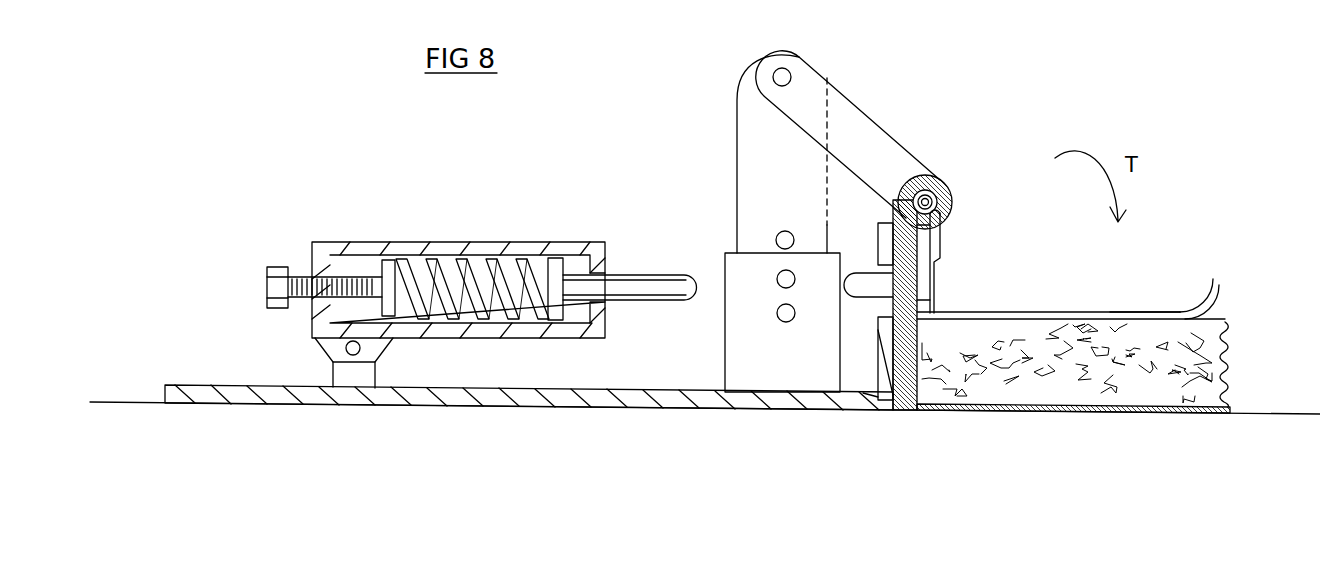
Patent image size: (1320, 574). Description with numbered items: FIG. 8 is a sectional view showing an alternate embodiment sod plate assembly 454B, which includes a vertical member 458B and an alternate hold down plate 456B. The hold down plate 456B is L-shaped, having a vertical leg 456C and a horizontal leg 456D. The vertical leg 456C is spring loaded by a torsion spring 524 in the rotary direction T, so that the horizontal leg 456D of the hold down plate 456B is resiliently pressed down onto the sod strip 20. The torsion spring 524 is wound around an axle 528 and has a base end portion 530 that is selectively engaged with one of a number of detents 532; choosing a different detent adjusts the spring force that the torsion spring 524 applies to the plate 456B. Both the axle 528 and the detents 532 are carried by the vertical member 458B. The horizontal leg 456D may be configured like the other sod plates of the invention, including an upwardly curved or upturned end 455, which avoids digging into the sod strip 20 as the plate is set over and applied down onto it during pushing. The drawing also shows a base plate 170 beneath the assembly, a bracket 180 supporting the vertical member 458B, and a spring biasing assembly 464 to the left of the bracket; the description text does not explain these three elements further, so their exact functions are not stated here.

The spring biasing assembly 464 is at (456, 236).
The detents 532 is at (910, 173).
The axle 528 is at (935, 172).
The base end portion 530 is at (905, 186).
The sod plate assembly 454B is at (968, 175).
The torsion spring 524 is at (943, 232).
The vertical member 458B is at (922, 288).
The vertical leg 456C is at (935, 296).
The hold down plate 456B is at (1067, 306).
The horizontal leg 456D is at (1110, 313).
The upwardly curved end 455 is at (1216, 277).
The base frame plate 170 is at (501, 422).
The mounting bracket 180 is at (882, 343).
The sod strip 20 is at (1020, 388).